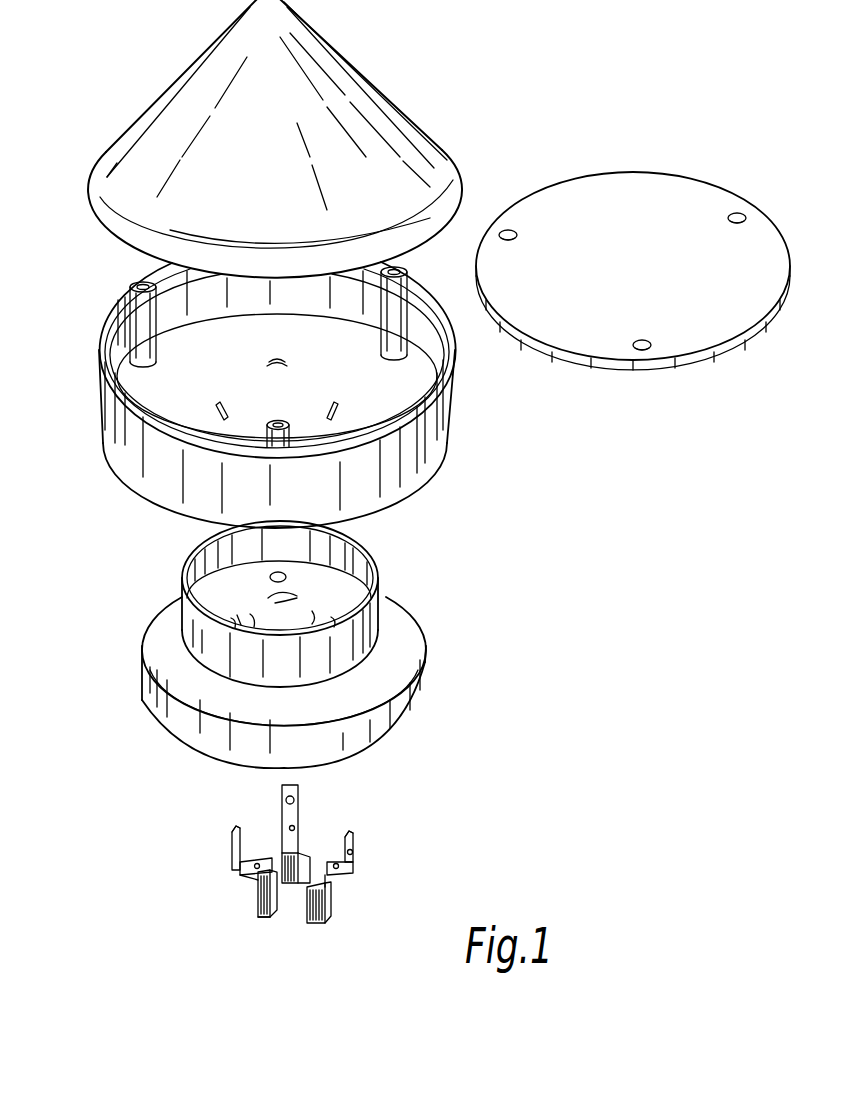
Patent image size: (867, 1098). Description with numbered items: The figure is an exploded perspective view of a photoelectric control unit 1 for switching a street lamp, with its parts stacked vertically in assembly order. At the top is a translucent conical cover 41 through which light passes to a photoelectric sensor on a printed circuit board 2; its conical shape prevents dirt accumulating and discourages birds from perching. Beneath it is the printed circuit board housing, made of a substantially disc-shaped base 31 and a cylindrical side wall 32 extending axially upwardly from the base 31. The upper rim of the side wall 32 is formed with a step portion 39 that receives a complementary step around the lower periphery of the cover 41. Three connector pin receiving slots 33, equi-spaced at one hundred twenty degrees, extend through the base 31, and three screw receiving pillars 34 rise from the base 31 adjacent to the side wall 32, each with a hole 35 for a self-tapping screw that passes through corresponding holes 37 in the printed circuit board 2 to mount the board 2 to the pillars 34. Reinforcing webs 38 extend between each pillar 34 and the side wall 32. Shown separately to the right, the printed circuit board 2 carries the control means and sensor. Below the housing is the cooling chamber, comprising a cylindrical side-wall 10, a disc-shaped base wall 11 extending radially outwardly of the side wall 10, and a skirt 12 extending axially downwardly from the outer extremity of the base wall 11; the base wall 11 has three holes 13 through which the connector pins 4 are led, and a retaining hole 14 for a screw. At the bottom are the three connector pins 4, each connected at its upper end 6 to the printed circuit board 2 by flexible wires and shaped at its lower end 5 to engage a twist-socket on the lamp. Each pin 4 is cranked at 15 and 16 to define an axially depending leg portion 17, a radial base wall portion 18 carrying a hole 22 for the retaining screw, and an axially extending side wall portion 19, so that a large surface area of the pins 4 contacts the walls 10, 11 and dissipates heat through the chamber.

The photoelectric control unit 1 is at (585, 700).
The printed circuit board 2 is at (703, 350).
The connector pins 4 is at (297, 796).
The lower ends 5 is at (263, 912).
The upper end 6 is at (283, 800).
The cylindrical side-wall 10 is at (365, 625).
The disc-shaped base wall 11 is at (400, 655).
The skirt 12 is at (405, 708).
The holes 13 is at (247, 620).
The retaining hole 14 is at (272, 572).
The crank 15 is at (263, 897).
The crank 16 is at (348, 878).
The leg portion 17 is at (283, 895).
The base wall portion 18 is at (257, 882).
The side wall portion 19 is at (300, 810).
The hole 22 is at (257, 860).
The base 31 is at (157, 378).
The cylindrical side wall 32 is at (424, 437).
The connector pin receiving slots 33 is at (213, 413).
The screw receiving pillars 34 is at (135, 345).
The hole 35 is at (143, 283).
The holes 37 is at (513, 230).
The reinforcing webs 38 is at (123, 317).
The step portion 39 is at (165, 430).
The translucent conical cover 41 is at (338, 100).